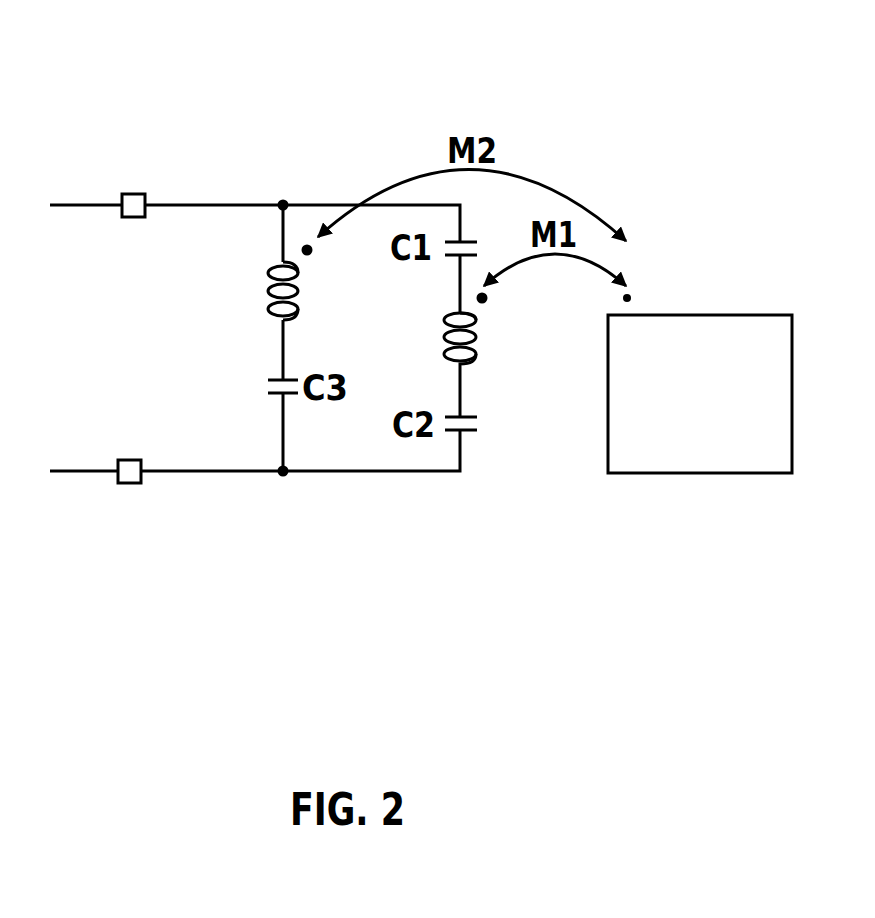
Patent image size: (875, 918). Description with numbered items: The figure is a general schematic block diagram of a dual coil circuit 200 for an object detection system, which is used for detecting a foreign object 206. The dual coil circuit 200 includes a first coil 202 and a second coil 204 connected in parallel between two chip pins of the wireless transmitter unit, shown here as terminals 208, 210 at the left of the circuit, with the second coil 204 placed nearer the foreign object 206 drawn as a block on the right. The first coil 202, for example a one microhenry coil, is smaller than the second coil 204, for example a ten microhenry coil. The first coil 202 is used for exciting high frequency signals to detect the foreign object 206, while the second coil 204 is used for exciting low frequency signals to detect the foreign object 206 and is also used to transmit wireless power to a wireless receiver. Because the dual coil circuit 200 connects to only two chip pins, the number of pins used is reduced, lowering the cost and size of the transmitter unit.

The dual coil circuit 200 is at (334, 123).
The first coil 202 is at (260, 291).
The second coil 204 is at (480, 366).
The foreign object 206 is at (697, 303).
The AC1 terminal 208 is at (138, 222).
The AC2 terminal 210 is at (149, 481).